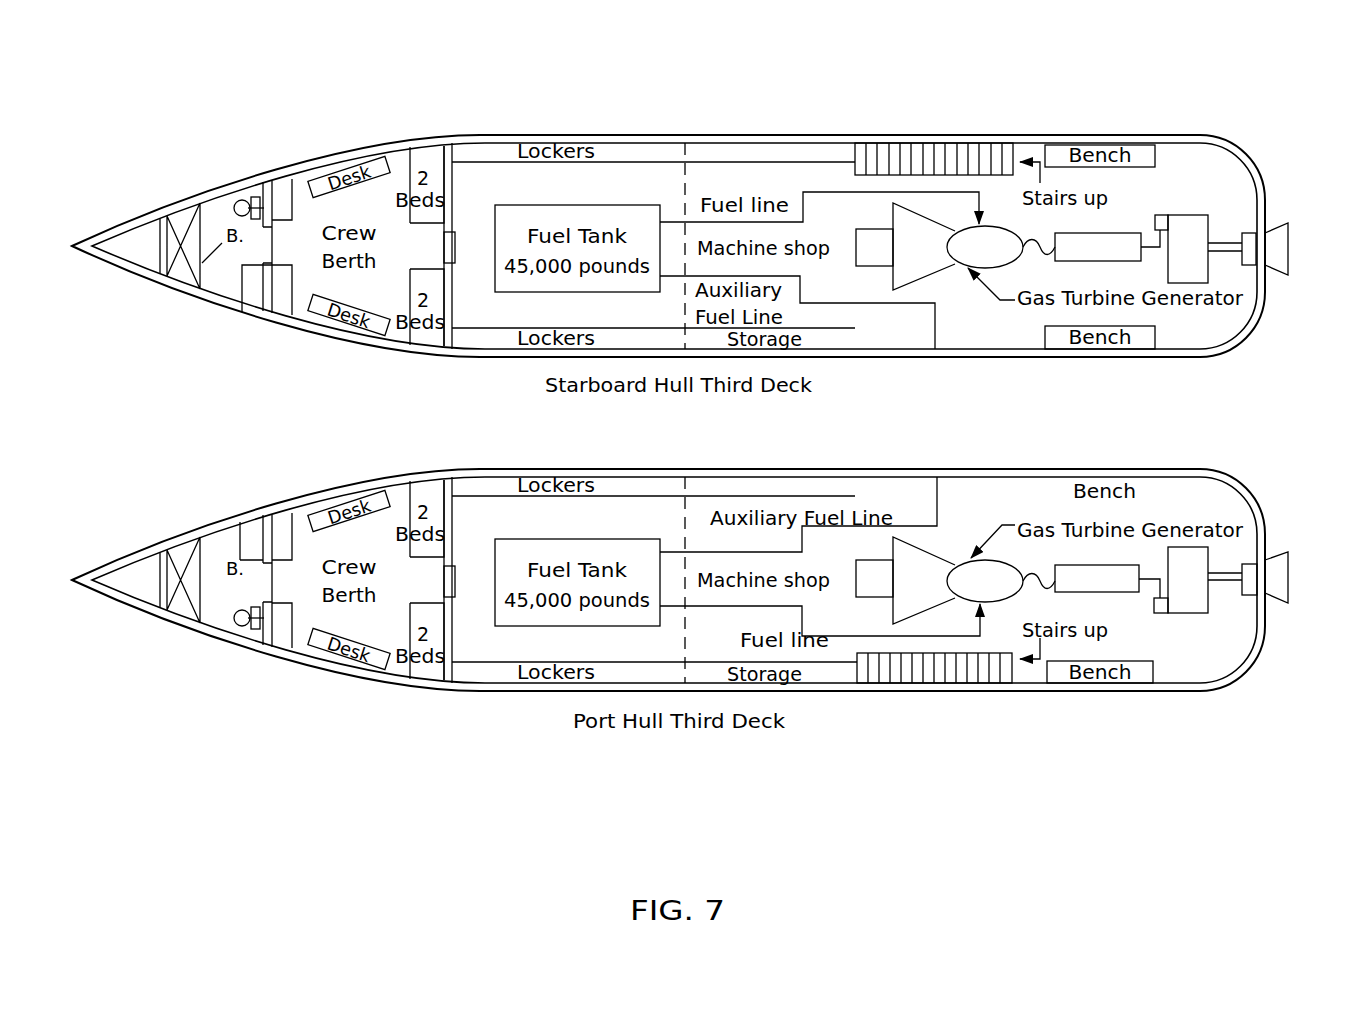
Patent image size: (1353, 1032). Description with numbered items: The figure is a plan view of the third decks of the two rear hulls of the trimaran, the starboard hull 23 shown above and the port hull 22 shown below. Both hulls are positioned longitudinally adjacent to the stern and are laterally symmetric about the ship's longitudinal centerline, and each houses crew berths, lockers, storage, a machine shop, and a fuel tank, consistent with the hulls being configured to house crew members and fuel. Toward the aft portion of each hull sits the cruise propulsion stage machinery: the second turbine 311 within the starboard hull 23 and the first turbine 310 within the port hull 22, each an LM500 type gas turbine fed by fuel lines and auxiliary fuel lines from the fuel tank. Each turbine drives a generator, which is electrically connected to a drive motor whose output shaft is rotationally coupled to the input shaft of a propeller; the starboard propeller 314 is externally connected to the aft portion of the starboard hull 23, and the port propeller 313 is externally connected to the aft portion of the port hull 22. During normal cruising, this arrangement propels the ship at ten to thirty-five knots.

The port hull 22 is at (674, 540).
The starboard hull 23 is at (328, 122).
The first turbine 310 is at (905, 519).
The second turbine 311 is at (903, 212).
The port propeller 313 is at (1270, 632).
The starboard propeller 314 is at (1288, 275).